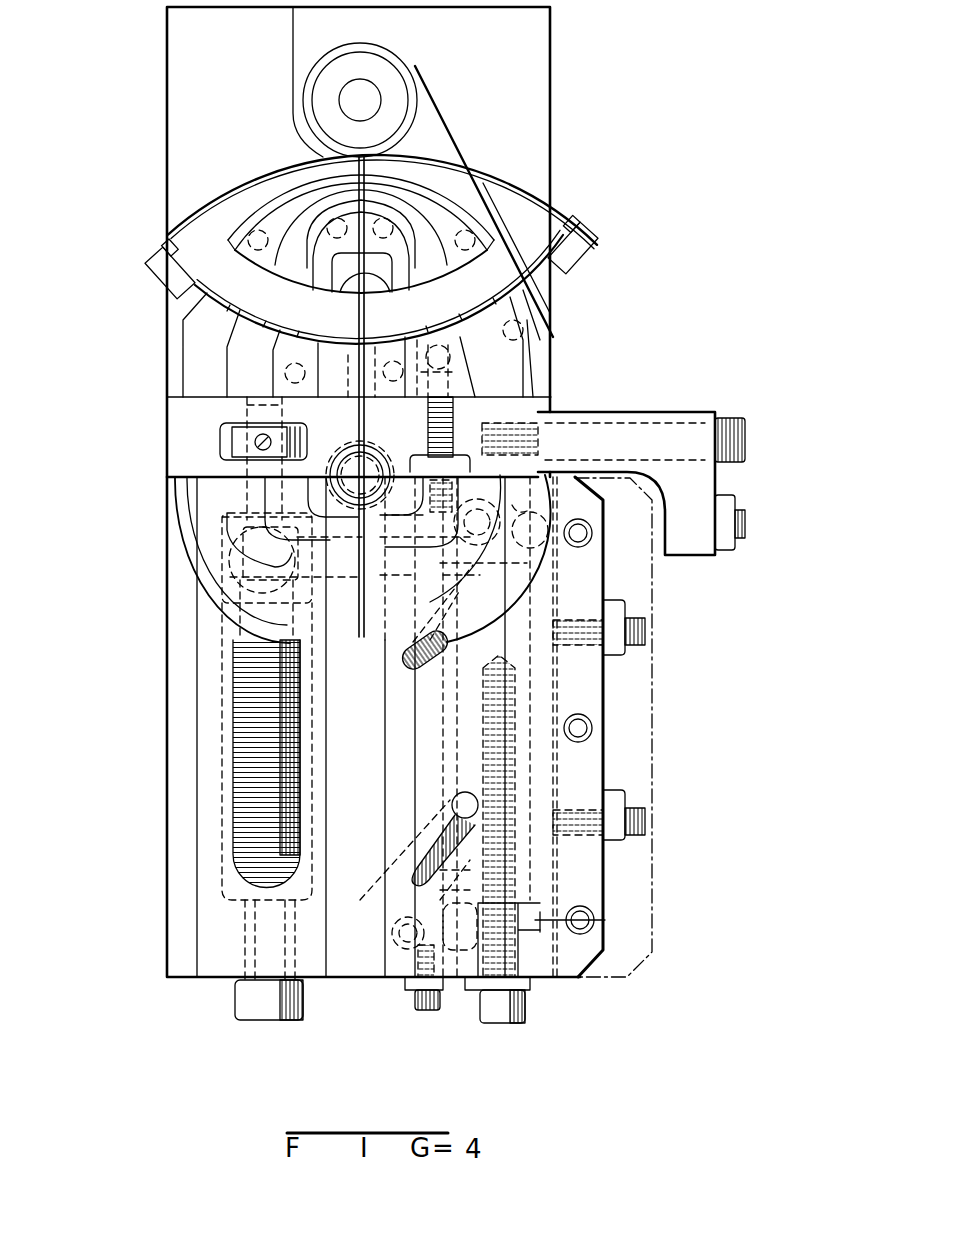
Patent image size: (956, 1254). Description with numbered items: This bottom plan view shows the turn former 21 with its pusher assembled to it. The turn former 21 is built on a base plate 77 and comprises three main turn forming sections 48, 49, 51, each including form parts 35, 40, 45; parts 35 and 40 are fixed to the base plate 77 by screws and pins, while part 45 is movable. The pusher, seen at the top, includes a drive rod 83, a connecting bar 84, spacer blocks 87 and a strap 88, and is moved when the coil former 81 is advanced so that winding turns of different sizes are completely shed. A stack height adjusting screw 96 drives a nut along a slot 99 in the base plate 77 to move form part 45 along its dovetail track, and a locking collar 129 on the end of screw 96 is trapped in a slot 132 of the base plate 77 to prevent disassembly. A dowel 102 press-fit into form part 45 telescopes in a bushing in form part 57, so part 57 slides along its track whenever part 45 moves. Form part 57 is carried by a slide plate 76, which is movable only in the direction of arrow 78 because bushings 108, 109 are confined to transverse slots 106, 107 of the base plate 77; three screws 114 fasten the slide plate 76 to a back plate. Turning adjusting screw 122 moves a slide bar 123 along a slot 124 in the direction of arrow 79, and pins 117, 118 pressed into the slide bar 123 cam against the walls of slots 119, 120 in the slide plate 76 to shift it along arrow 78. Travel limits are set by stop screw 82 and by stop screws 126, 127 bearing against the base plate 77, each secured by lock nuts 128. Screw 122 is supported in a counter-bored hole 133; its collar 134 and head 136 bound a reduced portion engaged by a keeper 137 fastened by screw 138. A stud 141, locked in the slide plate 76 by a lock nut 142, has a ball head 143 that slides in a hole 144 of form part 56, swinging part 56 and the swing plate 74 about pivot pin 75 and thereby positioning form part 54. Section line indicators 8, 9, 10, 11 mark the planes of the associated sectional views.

The turn former 21 is at (557, 88).
The base plate 77 is at (359, 69).
The swing plate 74 is at (370, 100).
The pivot pin 75 is at (367, 96).
The strap 88 is at (247, 182).
The spacer blocks 87 is at (165, 275).
The turn forming section 48 is at (238, 222).
The form part 35 is at (361, 241).
The form part 54 is at (455, 270).
The form part 40 is at (358, 345).
The turn forming section 49 is at (170, 363).
The form part 56 is at (530, 372).
The hole 144 is at (440, 345).
The ball head 143 is at (430, 345).
The locking collar 129 is at (228, 440).
The slot 132 is at (225, 428).
The connecting bar 84 is at (365, 408).
The drive rod 83 is at (345, 455).
The stud 141 is at (430, 425).
The nut 142 is at (418, 465).
The coil former 81 is at (675, 418).
The stop screw 82 is at (738, 530).
The lock nuts 128 is at (722, 505).
The slide plate 76 is at (605, 720).
The form part 57 is at (550, 570).
The bushing 108 is at (477, 509).
The slot 106 is at (529, 510).
The screws 114 is at (580, 532).
The stop screw 126 is at (645, 640).
The stop screw 127 is at (620, 845).
The turn forming section 51 is at (185, 595).
The form part 45 is at (285, 540).
The dowel 102 is at (363, 580).
The slot 99 is at (222, 722).
The slot 120 is at (405, 660).
The pin 118 is at (445, 598).
The pin 117 is at (466, 793).
The slot 119 is at (425, 830).
The slide bar 123 is at (520, 835).
The slot 124 is at (460, 897).
The counter-bored hole 133 is at (525, 950).
The bushing 109 is at (400, 940).
The slot 107 is at (447, 961).
The keeper 137 is at (405, 985).
The screw 138 is at (425, 1010).
The collar 134 is at (460, 1000).
The adjusting screw 122 is at (527, 1005).
The head 136 is at (500, 1025).
The stack height adjusting screw 96 is at (262, 1012).
The arrow 78 is at (735, 743).
The arrow 79 is at (746, 775).
The section line 11- 11 is at (105, 471).
The section line 10- 10 is at (97, 602).
The section line 9- 9 is at (97, 830).
The section line 8- 8 is at (97, 936).